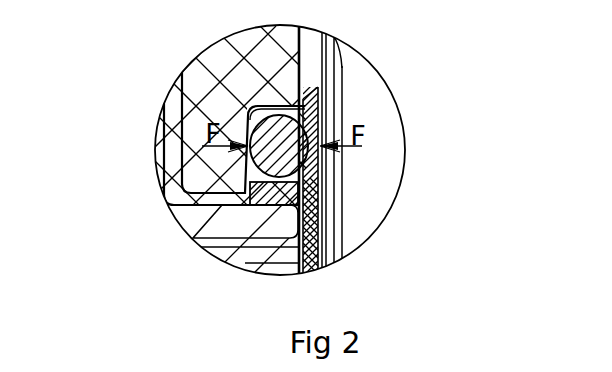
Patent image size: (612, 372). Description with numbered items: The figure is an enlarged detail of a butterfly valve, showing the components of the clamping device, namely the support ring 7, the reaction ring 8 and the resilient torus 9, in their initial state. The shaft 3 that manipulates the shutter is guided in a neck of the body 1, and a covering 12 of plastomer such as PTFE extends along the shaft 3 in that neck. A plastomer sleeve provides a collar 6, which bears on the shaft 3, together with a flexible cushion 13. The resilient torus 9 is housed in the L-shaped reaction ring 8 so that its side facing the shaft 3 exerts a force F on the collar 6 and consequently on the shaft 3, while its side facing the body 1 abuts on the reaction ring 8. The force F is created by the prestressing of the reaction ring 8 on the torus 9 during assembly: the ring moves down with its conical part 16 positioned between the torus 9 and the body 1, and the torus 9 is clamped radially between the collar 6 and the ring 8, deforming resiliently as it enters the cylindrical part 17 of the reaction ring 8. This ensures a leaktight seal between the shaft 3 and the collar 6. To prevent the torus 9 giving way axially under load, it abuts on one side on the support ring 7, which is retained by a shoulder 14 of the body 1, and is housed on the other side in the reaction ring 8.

The body 1 is at (158, 152).
The shaft 3 is at (362, 83).
The collar 6 is at (300, 190).
The support ring 7 is at (306, 202).
The reaction ring 8 is at (247, 73).
The resilient torus 9 is at (168, 198).
The covering 12 is at (331, 115).
The flexible cushion 13 is at (235, 250).
The shoulder 14 is at (338, 257).
The conical part 16 is at (245, 180).
The cylindrical part 17 is at (248, 112).